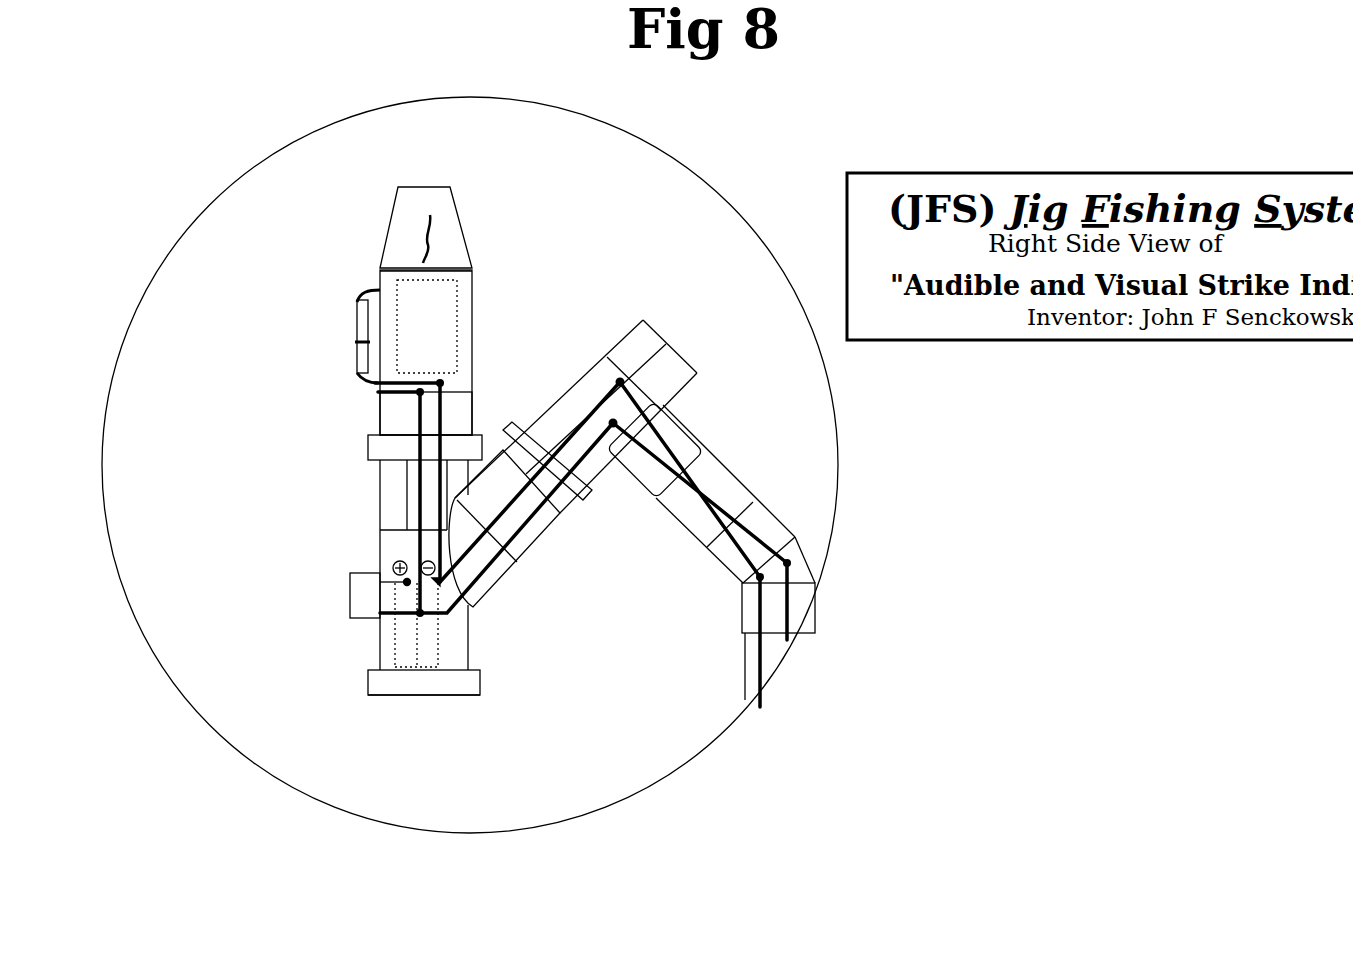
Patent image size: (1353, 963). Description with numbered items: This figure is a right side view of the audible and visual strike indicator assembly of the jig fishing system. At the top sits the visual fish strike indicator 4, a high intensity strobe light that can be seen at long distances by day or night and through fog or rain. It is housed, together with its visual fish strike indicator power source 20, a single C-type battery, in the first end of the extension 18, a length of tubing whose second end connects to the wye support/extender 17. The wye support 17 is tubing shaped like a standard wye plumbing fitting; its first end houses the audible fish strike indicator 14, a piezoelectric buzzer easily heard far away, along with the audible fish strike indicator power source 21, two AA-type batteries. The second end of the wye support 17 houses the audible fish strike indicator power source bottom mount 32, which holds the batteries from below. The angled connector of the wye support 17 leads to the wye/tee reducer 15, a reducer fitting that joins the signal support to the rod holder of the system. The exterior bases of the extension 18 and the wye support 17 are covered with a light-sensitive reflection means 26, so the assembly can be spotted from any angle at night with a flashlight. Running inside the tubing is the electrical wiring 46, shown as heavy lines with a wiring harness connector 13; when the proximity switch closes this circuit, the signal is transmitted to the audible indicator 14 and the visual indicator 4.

The visual fish strike indicator 4 is at (397, 240).
The wiring harness connector 13 is at (357, 330).
The audible fish strike indicator 14 is at (352, 596).
The wye/tee reducer 15 is at (582, 500).
The wye support/extender 17 is at (378, 655).
The extension 18 is at (393, 420).
The visual fish strike indicator power source 20 is at (416, 298).
The audible fish strike indicator power source 21 is at (428, 645).
The reflection means 26 is at (380, 452).
The audible fish strike indicator power source bottom mount 32 is at (397, 695).
The electrical wiring 46 is at (714, 484).